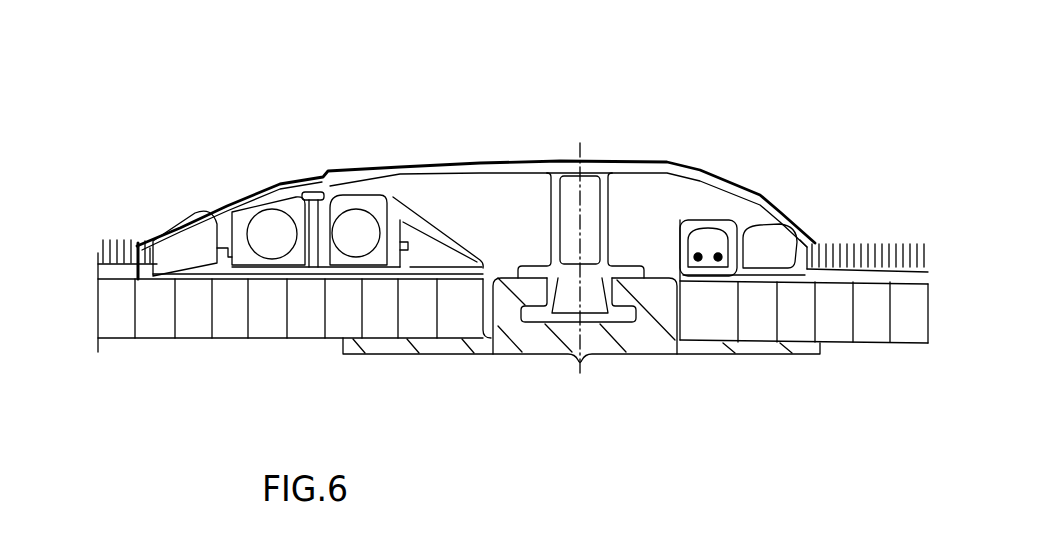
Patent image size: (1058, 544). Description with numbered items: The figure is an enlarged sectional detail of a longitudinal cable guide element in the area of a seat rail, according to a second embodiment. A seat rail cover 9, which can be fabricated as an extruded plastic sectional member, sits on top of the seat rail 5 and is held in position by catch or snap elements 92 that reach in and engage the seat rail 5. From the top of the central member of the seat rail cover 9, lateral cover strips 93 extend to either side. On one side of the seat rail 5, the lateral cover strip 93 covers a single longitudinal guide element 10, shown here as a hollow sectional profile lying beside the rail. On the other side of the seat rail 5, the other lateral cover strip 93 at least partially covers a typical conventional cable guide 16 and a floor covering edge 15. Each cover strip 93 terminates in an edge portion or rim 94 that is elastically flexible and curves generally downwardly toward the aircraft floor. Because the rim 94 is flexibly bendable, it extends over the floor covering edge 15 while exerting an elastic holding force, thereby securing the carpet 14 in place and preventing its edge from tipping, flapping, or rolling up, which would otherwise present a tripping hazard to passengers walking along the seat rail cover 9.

The seat rail 5 is at (537, 340).
The seat rail cover 9 is at (537, 139).
The longitudinal guide element 10 is at (275, 200).
The carpet 14 is at (126, 243).
The floor covering edge 15 is at (786, 257).
The cable guide 16 is at (742, 274).
The catch or snap elements 92 is at (612, 282).
The lateral cover strip 93 is at (348, 178).
The edge portion or rim 94 is at (152, 232).